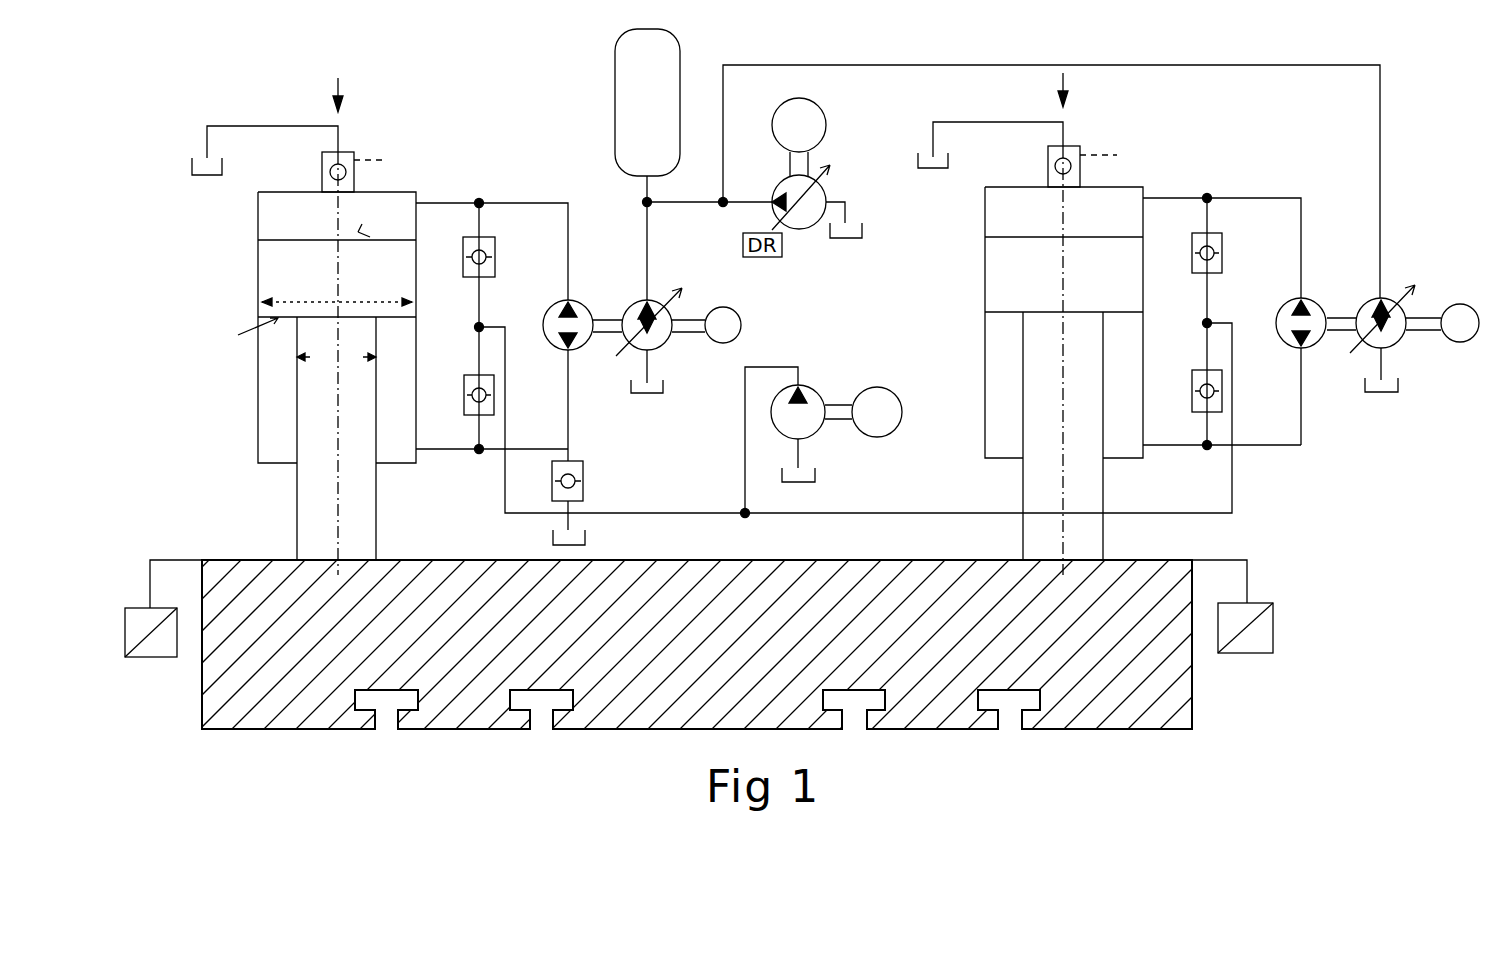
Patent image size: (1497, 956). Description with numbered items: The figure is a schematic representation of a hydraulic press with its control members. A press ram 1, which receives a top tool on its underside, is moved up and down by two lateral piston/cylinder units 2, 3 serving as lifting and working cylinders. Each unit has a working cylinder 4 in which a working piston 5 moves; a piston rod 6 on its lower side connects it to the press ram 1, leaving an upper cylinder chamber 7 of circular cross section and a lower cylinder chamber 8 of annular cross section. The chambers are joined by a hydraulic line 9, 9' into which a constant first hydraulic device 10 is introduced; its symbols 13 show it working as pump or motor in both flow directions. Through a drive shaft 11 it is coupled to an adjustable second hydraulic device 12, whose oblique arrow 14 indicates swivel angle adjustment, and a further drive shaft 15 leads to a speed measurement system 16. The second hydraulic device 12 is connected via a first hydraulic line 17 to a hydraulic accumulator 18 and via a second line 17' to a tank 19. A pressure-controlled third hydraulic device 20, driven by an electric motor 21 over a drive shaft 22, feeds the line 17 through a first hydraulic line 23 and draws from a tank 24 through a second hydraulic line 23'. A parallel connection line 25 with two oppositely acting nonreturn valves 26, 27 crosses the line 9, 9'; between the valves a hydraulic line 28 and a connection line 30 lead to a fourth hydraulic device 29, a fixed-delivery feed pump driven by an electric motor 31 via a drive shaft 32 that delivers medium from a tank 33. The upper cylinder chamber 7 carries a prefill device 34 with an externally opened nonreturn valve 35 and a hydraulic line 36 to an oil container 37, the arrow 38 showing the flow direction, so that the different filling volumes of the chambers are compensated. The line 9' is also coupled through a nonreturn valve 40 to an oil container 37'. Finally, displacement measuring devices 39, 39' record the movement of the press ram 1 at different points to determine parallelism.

The press ram 1 is at (1198, 710).
The piston/cylinder unit 2 is at (659, 314).
The piston/cylinder unit 3 is at (1134, 168).
The working cylinder 4 is at (243, 366).
The working piston 5 is at (700, 283).
The piston rod 6 is at (1060, 358).
The upper cylinder chamber 7 is at (700, 220).
The lower cylinder chamber 8 is at (641, 444).
The hydraulic line 9 is at (492, 228).
The pressure medium line 9' is at (589, 405).
The first hydraulic device 10 is at (556, 292).
The drive shaft 11 is at (604, 322).
The second hydraulic device 12 is at (668, 352).
The symbol 13 is at (548, 318).
The arrow 14 is at (680, 309).
The drive shaft 15 is at (693, 332).
The speed measurement system 16 is at (744, 318).
The first hydraulic line 17 is at (1038, 164).
The second line 17' is at (982, 373).
The hydraulic accumulator 18 is at (647, 102).
The tank 19 is at (645, 395).
The third hydraulic device 20 is at (808, 242).
The electric motor 21 is at (817, 118).
The drive shaft 22 is at (812, 162).
The first hydraulic line 23 is at (752, 177).
The second hydraulic line 23' is at (856, 198).
The tank 24 is at (847, 238).
The connection line 25 is at (474, 300).
The nonreturn valve 26 is at (490, 243).
The nonreturn valve 27 is at (466, 405).
The hydraulic line 28 is at (510, 470).
The fourth hydraulic device 29 is at (848, 389).
The connection line 30 is at (742, 432).
The electric motor 31 is at (893, 418).
The drive shaft 32 is at (837, 419).
The tank 33 is at (790, 475).
The prefill device 34 is at (358, 143).
The nonreturn valve 35 is at (330, 170).
The hydraulic line 36 is at (275, 116).
The oil container 37 is at (575, 188).
The oil container 37' is at (601, 523).
The arrow 38 is at (345, 83).
The displacement measuring device 39 is at (163, 634).
The displacement measuring device 39' is at (1232, 633).
The nonreturn valve 40 is at (585, 480).